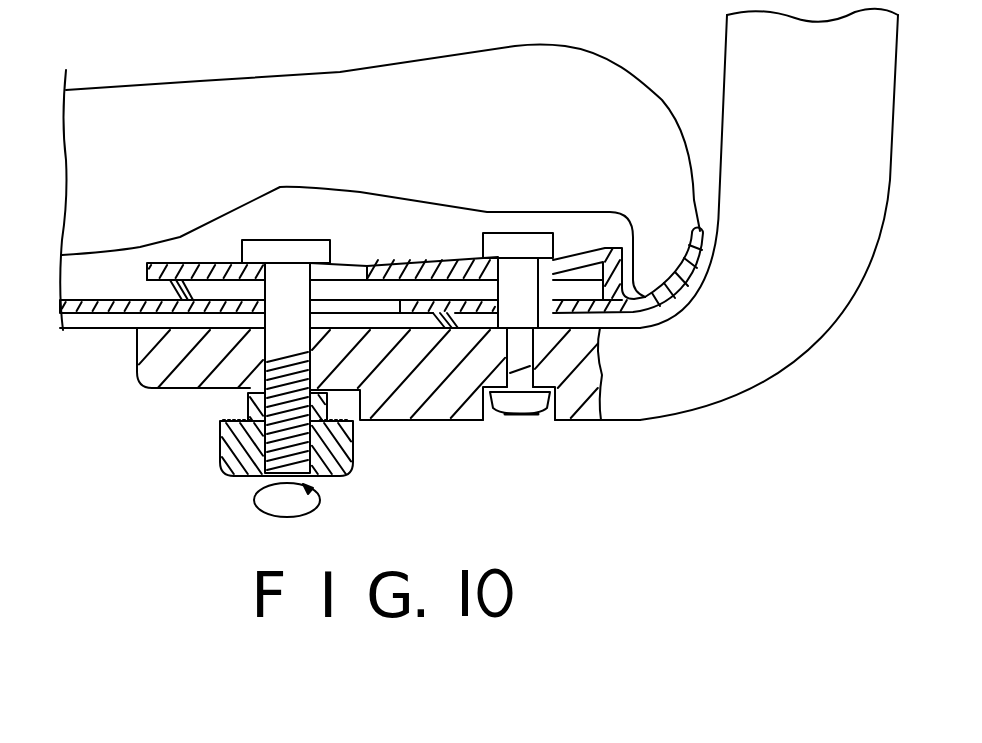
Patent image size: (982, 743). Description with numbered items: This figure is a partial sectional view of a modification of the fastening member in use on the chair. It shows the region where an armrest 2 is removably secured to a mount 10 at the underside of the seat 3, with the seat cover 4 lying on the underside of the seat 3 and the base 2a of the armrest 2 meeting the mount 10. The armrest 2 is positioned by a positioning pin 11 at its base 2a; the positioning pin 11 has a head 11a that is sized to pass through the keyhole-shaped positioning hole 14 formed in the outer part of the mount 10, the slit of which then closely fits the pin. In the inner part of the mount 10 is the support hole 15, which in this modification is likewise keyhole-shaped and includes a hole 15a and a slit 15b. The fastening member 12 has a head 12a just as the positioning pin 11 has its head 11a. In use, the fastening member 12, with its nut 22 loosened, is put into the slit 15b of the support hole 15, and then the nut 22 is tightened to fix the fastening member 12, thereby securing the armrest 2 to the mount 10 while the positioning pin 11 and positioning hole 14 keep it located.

The armrest 2 is at (753, 53).
The base 2a is at (398, 398).
The seat 3 is at (258, 107).
The seat cover 4 is at (108, 303).
The mount 10 is at (427, 270).
The positioning pin 11 is at (545, 344).
The head 11a is at (517, 233).
The fastening member 12 is at (256, 360).
The head 12a is at (290, 240).
The positioning hole 14 is at (578, 255).
The support hole 15 is at (355, 266).
The hole 15a is at (381, 265).
The slit 15b is at (233, 263).
The nut 22 is at (240, 470).